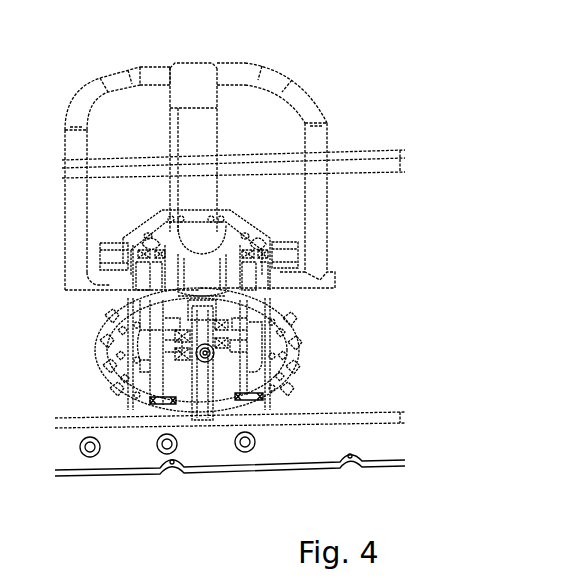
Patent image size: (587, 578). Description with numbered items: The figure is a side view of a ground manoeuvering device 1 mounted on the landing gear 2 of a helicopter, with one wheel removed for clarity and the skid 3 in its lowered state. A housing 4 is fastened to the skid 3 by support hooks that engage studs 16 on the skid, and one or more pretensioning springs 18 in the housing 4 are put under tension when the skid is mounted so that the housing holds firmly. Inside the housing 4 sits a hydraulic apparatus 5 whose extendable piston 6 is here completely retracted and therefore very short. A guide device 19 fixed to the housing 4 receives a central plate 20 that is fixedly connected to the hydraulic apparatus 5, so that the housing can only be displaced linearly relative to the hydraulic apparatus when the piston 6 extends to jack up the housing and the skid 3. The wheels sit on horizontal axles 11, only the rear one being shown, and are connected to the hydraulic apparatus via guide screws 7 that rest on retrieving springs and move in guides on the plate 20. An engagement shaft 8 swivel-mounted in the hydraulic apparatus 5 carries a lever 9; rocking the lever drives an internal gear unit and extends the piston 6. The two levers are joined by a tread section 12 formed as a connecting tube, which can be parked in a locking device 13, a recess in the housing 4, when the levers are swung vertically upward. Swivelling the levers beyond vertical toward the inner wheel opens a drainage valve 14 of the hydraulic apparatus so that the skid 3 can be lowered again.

The ground manoeuvering device 1 is at (398, 366).
The landing gear 2 is at (338, 157).
The skid 3 is at (300, 448).
The housing 4 is at (178, 148).
The hydraulic apparatus 5 is at (200, 280).
The piston 6 is at (200, 238).
The guide screw 7 is at (168, 292).
The first engagement shaft 8 is at (80, 294).
The lever 9 is at (82, 247).
The axle 11 is at (205, 357).
The tread section 12 is at (162, 78).
The locking device 13 is at (203, 78).
The drainage valve 14 is at (148, 288).
The stud 16 is at (98, 454).
The pretensioning spring 18 is at (247, 398).
The guide device 19 is at (230, 345).
The plate 20 is at (237, 300).